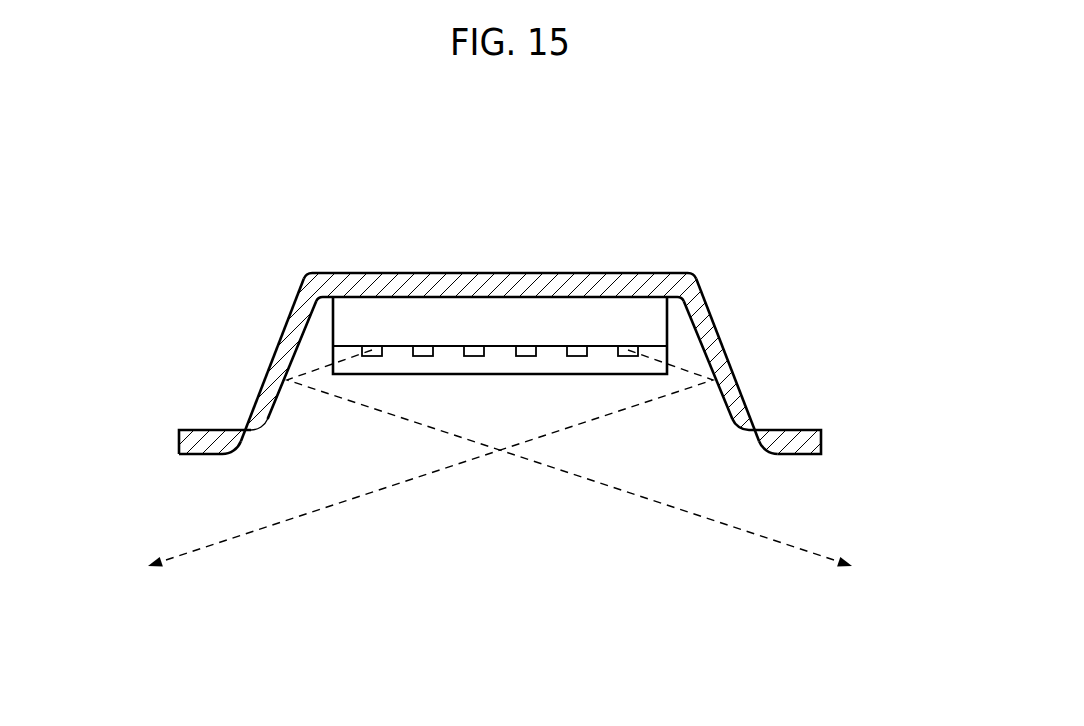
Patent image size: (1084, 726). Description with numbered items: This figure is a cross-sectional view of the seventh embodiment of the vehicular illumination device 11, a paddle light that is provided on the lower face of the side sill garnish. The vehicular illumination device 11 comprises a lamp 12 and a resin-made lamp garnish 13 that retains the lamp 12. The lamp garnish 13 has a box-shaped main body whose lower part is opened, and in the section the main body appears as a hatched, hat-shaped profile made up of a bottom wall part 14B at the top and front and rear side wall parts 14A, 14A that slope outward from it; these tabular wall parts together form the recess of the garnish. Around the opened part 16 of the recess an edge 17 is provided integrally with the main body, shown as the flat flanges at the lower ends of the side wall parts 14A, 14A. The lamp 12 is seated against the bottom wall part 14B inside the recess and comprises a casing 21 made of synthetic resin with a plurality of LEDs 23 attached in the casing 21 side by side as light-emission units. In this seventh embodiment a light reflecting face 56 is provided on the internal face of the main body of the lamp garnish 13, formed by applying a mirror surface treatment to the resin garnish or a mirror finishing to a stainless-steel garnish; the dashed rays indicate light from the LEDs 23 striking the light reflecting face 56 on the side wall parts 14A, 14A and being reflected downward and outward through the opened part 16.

The vehicular illumination device 11 is at (726, 223).
The lamp 12 is at (559, 306).
The lamp garnish 13 is at (734, 292).
The side wall part 14A is at (268, 365).
The bottom wall part 14B is at (499, 275).
The opened part 16 is at (746, 453).
The edge 17 is at (798, 447).
The casing 21 is at (643, 313).
The LEDs 23 is at (473, 346).
The light reflecting face 56 is at (302, 343).